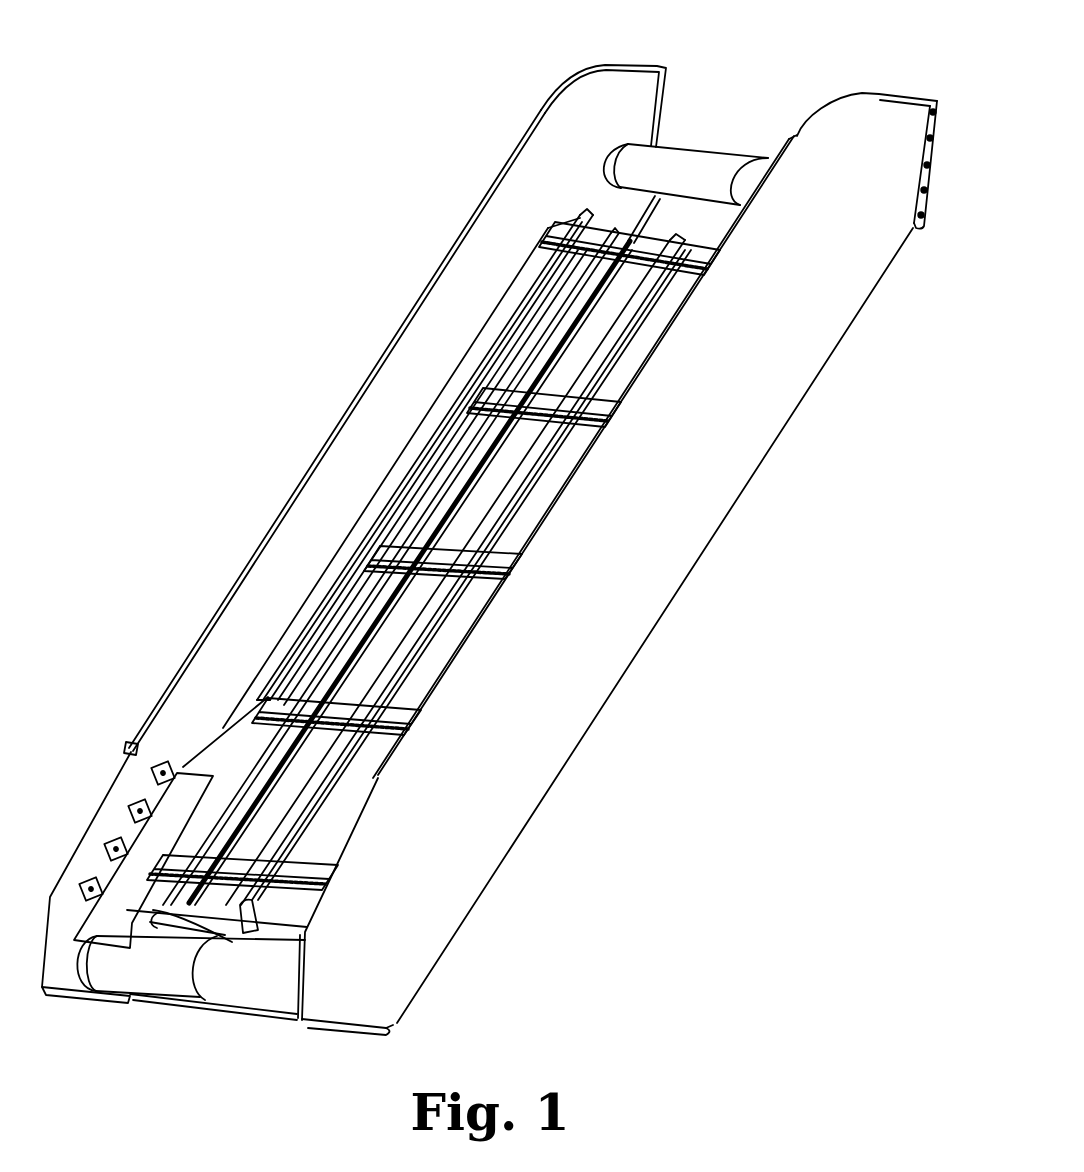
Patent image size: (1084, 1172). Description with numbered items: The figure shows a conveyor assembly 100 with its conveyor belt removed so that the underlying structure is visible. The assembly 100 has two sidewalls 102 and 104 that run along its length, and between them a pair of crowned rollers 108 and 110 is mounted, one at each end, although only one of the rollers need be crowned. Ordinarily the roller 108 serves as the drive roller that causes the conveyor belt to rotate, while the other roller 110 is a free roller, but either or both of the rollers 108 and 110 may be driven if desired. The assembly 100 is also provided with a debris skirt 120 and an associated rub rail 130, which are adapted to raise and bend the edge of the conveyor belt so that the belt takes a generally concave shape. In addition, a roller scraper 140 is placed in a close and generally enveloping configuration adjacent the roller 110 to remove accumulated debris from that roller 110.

The conveyor assembly 100 is at (215, 400).
The sidewall 102 is at (565, 120).
The sidewall 104 is at (833, 315).
The roller 108 is at (692, 163).
The roller 110 is at (155, 975).
The debris skirt 120 is at (193, 770).
The rub rail 130 is at (400, 500).
The roller scraper 140 is at (230, 940).